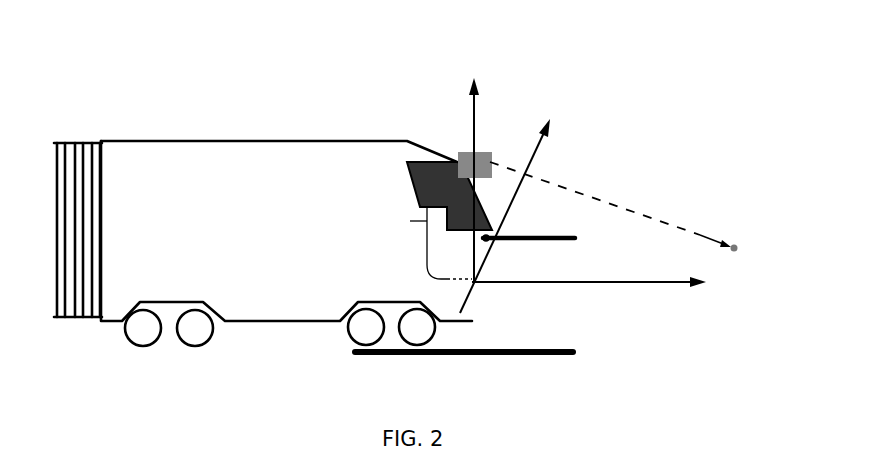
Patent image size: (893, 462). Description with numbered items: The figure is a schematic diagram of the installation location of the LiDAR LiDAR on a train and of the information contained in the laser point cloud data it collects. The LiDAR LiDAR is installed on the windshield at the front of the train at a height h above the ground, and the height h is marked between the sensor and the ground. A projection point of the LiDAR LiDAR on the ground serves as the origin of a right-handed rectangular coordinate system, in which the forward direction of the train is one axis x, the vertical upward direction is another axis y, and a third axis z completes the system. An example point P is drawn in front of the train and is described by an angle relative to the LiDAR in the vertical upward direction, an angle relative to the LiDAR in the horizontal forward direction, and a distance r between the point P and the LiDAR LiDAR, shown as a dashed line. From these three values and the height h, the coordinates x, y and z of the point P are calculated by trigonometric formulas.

The element LiDAR is at (490, 150).
The z coordinate axis z is at (481, 174).
The y coordinate axis y is at (515, 215).
The x coordinate axis x is at (589, 271).
The height h is at (412, 221).
The distance r is at (595, 198).
The point P is at (727, 238).